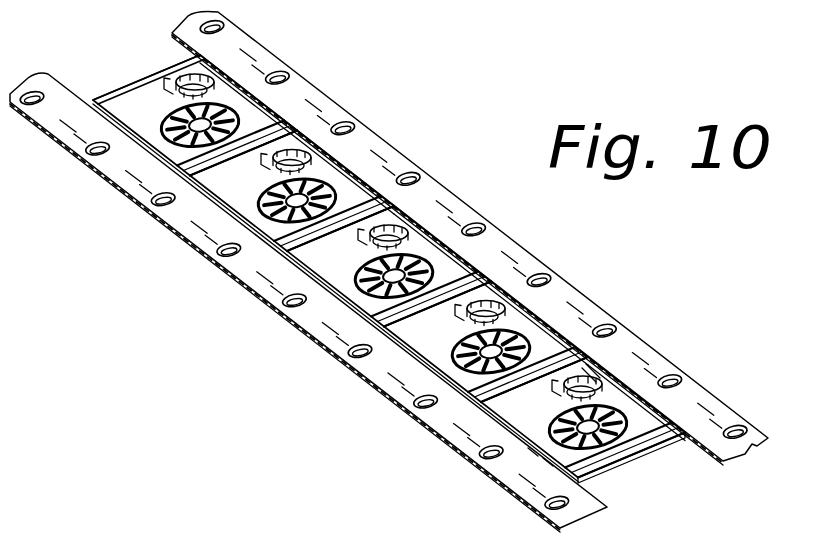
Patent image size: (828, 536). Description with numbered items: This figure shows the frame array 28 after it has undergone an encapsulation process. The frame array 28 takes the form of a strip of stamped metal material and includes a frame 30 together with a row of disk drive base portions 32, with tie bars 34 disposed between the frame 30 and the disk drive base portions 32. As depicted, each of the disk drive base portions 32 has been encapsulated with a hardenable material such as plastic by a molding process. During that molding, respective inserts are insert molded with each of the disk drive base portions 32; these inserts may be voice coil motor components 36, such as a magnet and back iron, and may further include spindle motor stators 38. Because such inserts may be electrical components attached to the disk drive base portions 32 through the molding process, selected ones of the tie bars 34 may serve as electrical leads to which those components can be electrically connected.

The frame array 28 is at (391, 77).
The frame 30 is at (263, 293).
The disk drive base portions 32 is at (237, 97).
The tie bars 34 is at (548, 462).
The voice coil motor components 36 is at (598, 375).
The spindle motor stators 38 is at (637, 458).